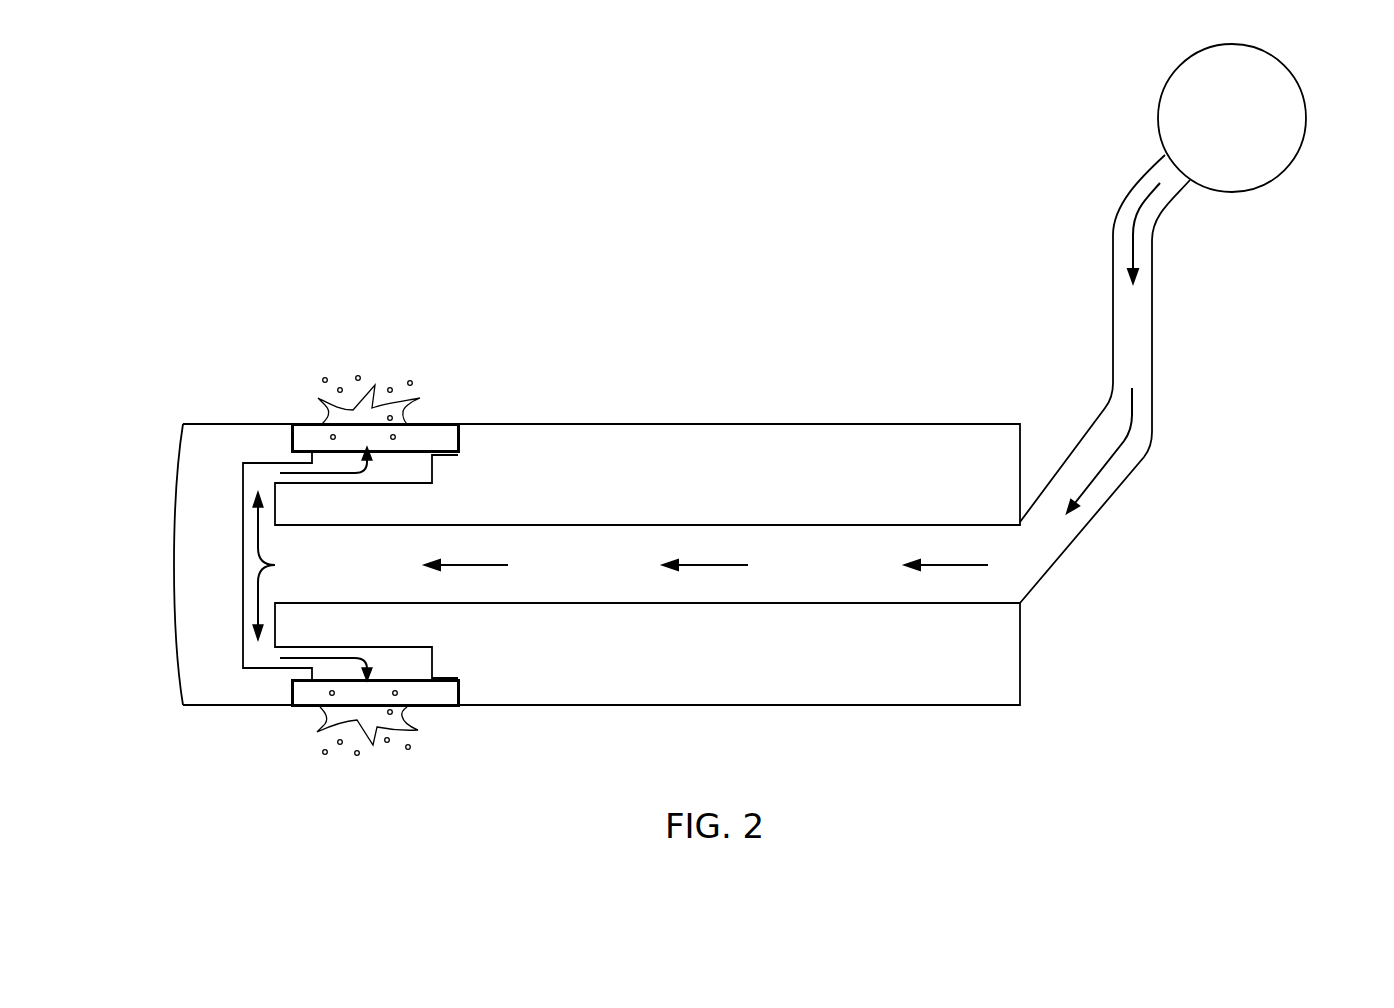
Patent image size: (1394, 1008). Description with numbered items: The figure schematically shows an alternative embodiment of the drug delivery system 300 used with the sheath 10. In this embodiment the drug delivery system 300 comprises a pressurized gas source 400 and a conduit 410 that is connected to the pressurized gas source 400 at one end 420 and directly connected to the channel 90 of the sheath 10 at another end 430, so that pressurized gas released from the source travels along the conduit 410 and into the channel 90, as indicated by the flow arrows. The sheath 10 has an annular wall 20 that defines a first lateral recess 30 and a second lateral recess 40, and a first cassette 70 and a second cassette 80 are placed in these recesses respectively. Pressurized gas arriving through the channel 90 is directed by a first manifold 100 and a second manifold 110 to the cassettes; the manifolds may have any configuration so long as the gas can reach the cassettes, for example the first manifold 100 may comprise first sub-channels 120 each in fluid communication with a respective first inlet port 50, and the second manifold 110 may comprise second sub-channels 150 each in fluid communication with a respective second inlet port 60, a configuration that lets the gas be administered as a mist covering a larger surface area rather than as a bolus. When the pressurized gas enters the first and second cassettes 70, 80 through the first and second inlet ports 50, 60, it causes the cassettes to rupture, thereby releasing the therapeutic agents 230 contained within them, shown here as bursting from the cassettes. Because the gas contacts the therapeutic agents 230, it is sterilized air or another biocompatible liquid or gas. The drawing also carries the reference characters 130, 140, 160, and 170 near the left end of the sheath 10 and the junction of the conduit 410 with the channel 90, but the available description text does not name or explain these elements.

The sheath 10 is at (805, 398).
The annular wall 20 is at (778, 706).
The first lateral recess 30 is at (290, 679).
The second lateral recess 40 is at (291, 451).
The first inlet port 50 is at (330, 684).
The second inlet port 60 is at (376, 453).
The first cassette 70 is at (374, 716).
The second cassette 80 is at (374, 437).
The channel 90 is at (702, 543).
The first manifold 100 is at (228, 658).
The second manifold 110 is at (262, 448).
The first sub-channel 120 is at (423, 658).
The distribution channel 130 is at (253, 608).
The upper branch 140 is at (281, 476).
The second sub-channel 150 is at (422, 458).
The end cap 160 is at (153, 553).
The inlet junction 170 is at (1037, 613).
The therapeutic agents 230 is at (413, 381).
The drug delivery system 300 is at (652, 286).
The pressurized gas source 400 is at (1302, 140).
The conduit 410 is at (1152, 393).
The one end 420 is at (1165, 155).
The another end 430 is at (1043, 587).